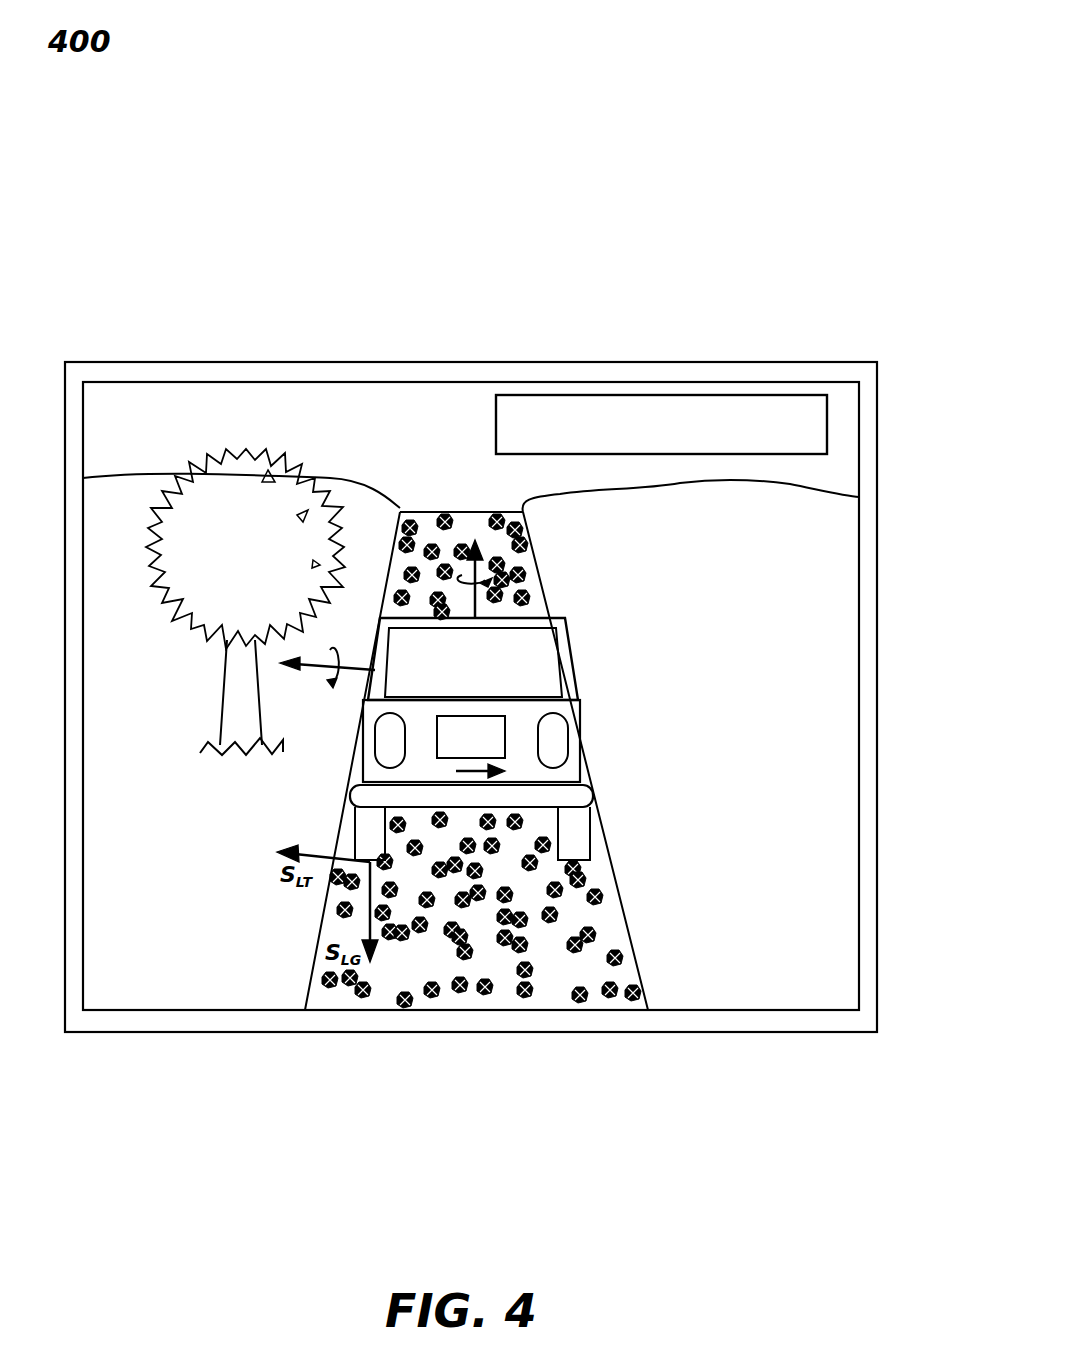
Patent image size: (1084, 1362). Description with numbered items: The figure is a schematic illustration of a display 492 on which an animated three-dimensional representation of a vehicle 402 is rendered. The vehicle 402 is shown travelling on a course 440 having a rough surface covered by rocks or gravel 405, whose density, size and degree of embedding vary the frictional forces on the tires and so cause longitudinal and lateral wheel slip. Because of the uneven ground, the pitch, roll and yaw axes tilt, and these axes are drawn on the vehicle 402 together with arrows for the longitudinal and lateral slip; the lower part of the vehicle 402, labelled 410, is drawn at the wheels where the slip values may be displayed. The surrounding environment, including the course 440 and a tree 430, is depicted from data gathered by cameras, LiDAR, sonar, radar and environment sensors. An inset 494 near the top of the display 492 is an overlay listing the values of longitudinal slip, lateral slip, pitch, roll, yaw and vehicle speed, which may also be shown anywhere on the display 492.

The display 492 is at (662, 362).
The inset 494 is at (828, 423).
The vehicle 402 is at (572, 653).
The vehicle bumper and wheels 410 is at (590, 845).
The tree 430 is at (225, 658).
The course 440 is at (476, 761).
The rocks or gravel 405 is at (622, 960).